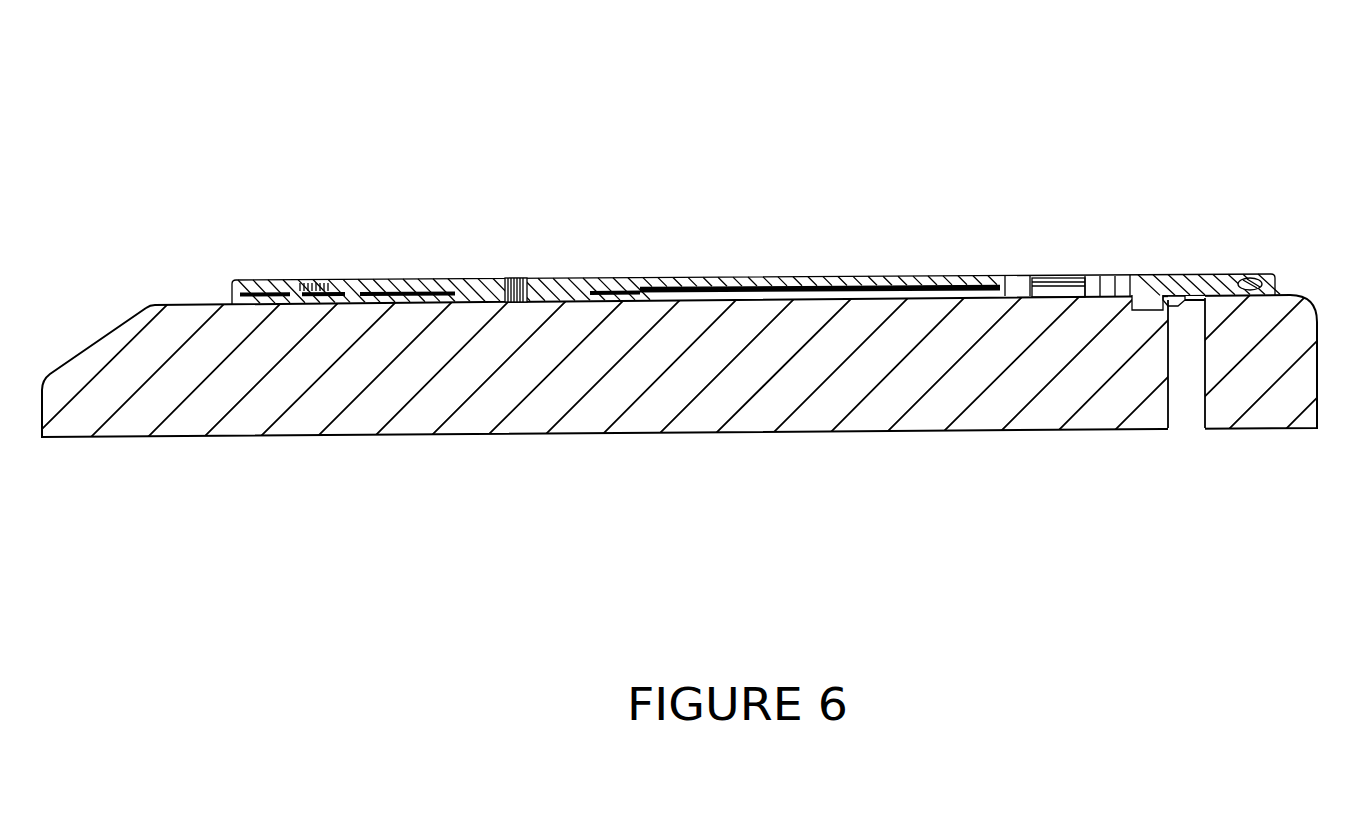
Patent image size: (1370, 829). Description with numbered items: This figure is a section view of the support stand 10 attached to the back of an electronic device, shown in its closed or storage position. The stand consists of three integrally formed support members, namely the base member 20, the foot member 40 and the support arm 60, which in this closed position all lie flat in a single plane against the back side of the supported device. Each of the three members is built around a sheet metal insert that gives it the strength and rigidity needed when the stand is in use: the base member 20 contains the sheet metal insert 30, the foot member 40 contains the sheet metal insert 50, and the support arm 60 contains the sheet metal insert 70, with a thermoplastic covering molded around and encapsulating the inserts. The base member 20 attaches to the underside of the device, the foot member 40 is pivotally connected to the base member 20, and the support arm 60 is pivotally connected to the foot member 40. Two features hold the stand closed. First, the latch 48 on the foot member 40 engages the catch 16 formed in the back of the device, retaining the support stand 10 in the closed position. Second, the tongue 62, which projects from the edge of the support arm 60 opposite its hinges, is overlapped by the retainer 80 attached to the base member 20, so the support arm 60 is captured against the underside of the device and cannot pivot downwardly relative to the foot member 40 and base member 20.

The support stand 10 is at (764, 188).
The catch 16 is at (1196, 306).
The base member 20 is at (269, 268).
The sheet metal insert 30 is at (376, 270).
The foot member 40 is at (1171, 261).
The latch 48 is at (1170, 312).
The sheet metal insert 50 is at (1260, 263).
The support arm 60 is at (885, 264).
The tongue 62 is at (551, 267).
The sheet metal insert 70 is at (989, 271).
The retainer 80 is at (515, 268).